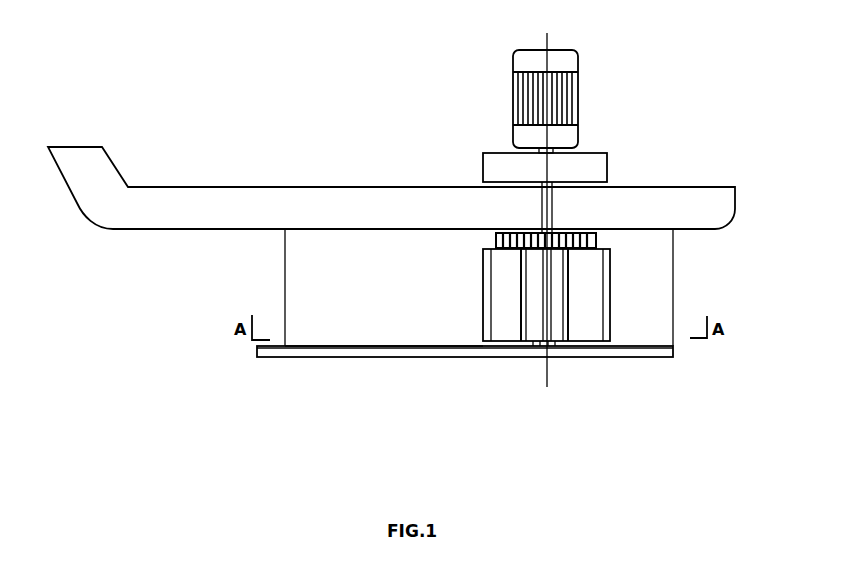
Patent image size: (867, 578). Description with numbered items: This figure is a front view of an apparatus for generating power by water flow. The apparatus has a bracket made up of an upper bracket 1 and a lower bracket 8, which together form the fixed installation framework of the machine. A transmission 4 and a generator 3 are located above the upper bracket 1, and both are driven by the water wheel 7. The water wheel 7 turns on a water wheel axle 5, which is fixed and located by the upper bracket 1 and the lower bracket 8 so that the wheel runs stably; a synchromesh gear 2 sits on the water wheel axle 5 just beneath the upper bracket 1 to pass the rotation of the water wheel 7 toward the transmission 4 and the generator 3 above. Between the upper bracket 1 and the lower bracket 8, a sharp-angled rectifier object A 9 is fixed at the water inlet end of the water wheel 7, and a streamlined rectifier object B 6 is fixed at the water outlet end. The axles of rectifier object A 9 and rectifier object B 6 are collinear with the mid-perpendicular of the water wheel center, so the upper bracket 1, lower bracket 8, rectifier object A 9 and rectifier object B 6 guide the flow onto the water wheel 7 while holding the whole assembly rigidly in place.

The upper bracket 1 is at (372, 205).
The synchromesh gear 2 is at (495, 230).
The generator 3 is at (525, 138).
The transmission 4 is at (582, 162).
The water wheel axle 5 is at (553, 218).
The rectifier object B 6 is at (642, 315).
The water wheel 7 is at (577, 297).
The lower bracket 8 is at (460, 350).
The rectifier object A 9 is at (365, 288).